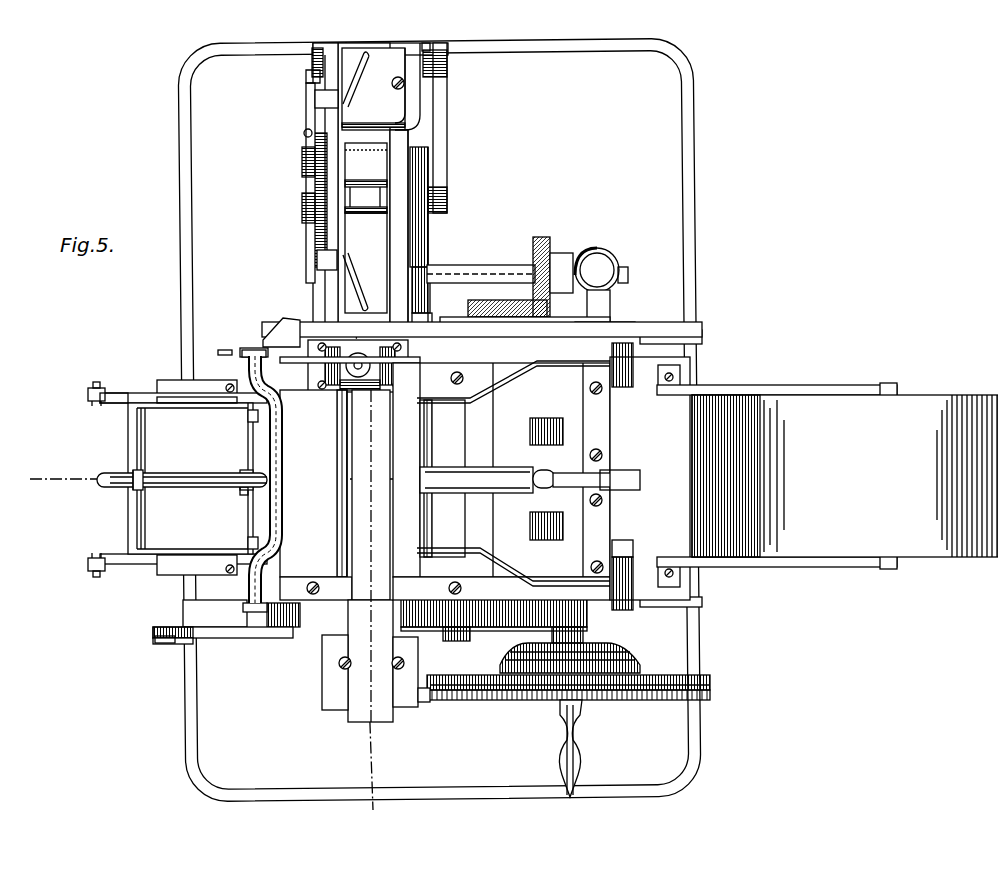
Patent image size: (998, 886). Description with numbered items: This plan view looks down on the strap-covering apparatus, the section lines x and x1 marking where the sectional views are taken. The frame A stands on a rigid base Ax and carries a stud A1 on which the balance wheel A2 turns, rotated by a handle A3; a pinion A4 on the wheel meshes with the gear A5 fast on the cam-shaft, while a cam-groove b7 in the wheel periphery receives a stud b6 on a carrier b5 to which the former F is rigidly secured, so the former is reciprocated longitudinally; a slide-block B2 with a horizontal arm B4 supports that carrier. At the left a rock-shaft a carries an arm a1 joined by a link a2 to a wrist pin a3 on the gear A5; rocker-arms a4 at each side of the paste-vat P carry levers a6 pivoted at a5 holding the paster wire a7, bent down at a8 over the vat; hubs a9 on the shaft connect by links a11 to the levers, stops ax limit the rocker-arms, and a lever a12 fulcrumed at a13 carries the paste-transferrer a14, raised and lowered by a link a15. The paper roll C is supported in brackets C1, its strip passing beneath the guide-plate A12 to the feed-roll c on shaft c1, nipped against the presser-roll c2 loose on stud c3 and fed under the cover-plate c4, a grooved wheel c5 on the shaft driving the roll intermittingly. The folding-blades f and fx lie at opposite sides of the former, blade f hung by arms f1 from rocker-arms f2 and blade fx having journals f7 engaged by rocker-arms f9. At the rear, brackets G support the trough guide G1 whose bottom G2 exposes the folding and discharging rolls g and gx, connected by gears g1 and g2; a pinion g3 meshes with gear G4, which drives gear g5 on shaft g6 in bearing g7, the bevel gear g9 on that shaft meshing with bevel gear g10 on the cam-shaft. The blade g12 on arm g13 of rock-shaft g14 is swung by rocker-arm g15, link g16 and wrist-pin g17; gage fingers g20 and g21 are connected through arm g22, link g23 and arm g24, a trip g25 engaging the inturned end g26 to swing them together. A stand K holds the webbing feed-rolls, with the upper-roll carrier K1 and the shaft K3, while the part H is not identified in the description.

The frame A is at (205, 372).
The stud A1 is at (680, 165).
The rigid base Ax is at (645, 786).
The guide-plate A12 is at (625, 408).
The driving or balance wheel A2 is at (515, 700).
The handle A3 is at (580, 760).
The pinion A4 is at (622, 565).
The gear A5 is at (520, 650).
The section line x′ x′ x1 is at (355, 423).
The section line x x is at (357, 478).
The brackets G is at (320, 190).
The trough-like guide G1 is at (410, 243).
The bottom of trough-like guide G2 is at (378, 48).
The gear G4 is at (410, 135).
The folding and discharging roll g is at (470, 150).
The gear g1 is at (308, 162).
The gear g2 is at (306, 208).
The pinion g3 is at (430, 205).
The gear g5 is at (430, 305).
The shaft g6 is at (490, 300).
The bearing g7 is at (606, 252).
The beveled gear g9 is at (543, 245).
The beveled gear g10 is at (487, 272).
The thin blade or finger g12 is at (366, 178).
The rocking arm g13 is at (420, 100).
The rock-shaft g14 is at (447, 62).
The rocker-arm g15 is at (428, 50).
The link g16 is at (447, 150).
The wrist-pin g17 is at (447, 196).
The gage finger g20 is at (352, 95).
The gage finger g21 is at (290, 283).
The arm g22 is at (317, 104).
The link g23 is at (308, 240).
The downturned outer end or arm g24 is at (317, 262).
The trip g25 is at (312, 64).
The inturned lower extremity g26 is at (306, 86).
The folding and discharging roll gx is at (366, 263).
The handle knob H is at (601, 289).
The stand K is at (312, 395).
The carrier K1 is at (360, 392).
The shaft K3 is at (345, 390).
The former F is at (352, 488).
The folding-blade f is at (390, 518).
The folding-blade fx is at (316, 495).
The arms f1 is at (510, 380).
The rocker-arms f2 is at (680, 330).
The journals f7 is at (258, 613).
The rocker-arms f9 is at (268, 325).
The slide-block B2 is at (615, 472).
The horizontally-extended arm B4 is at (447, 462).
The feed-roll c is at (505, 405).
The shaft c1 is at (555, 322).
The presser-roll c2 is at (515, 525).
The stud c3 is at (545, 470).
The cover-plate c4 is at (476, 452).
The grooved wheel c5 is at (615, 322).
The roll of paper C is at (930, 393).
The brackets C1 is at (800, 385).
The paste-vat P is at (190, 478).
The rock-shaft a is at (224, 350).
The arm a1 is at (172, 394).
The link a2 is at (222, 638).
The wrist pin or stud a3 is at (455, 641).
The rocker-arms a4 is at (88, 402).
The pivot a5 is at (96, 384).
The levers a6 is at (112, 403).
The paster a7 is at (246, 498).
The bent ends of paster a8 is at (248, 418).
The hubs a9 is at (248, 544).
The link a11 is at (148, 393).
The lever a12 is at (185, 475).
The fulcrum a13 is at (133, 490).
The paste-lifter a14 is at (243, 472).
The link a15 is at (100, 492).
The stops ax is at (170, 557).
The carrier b5 is at (322, 685).
The roller or stud b6 is at (424, 702).
The cam-groove b7 is at (485, 700).